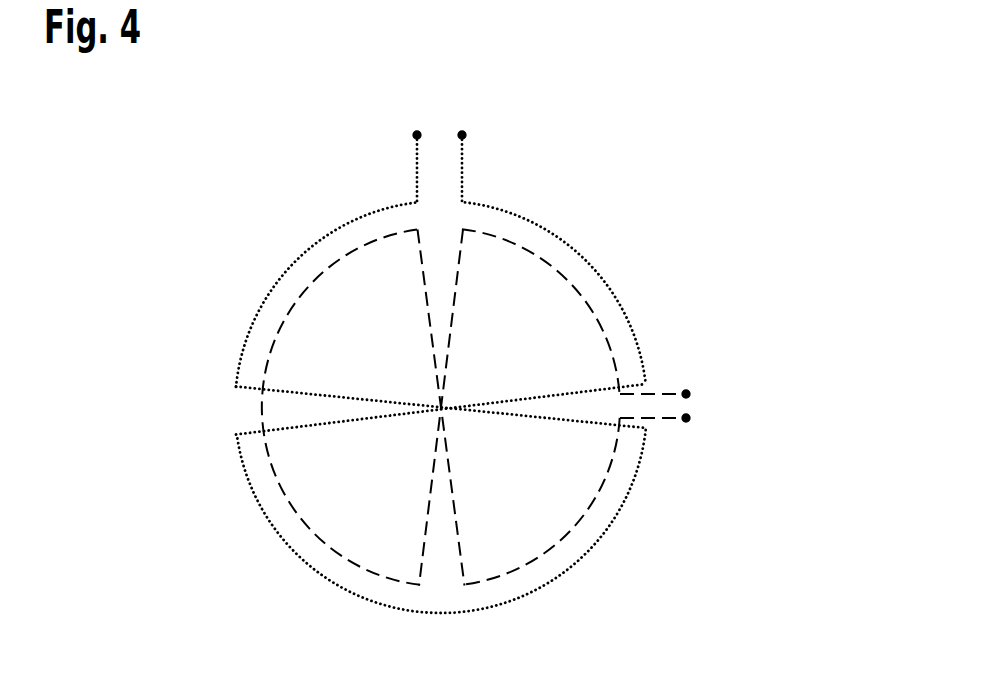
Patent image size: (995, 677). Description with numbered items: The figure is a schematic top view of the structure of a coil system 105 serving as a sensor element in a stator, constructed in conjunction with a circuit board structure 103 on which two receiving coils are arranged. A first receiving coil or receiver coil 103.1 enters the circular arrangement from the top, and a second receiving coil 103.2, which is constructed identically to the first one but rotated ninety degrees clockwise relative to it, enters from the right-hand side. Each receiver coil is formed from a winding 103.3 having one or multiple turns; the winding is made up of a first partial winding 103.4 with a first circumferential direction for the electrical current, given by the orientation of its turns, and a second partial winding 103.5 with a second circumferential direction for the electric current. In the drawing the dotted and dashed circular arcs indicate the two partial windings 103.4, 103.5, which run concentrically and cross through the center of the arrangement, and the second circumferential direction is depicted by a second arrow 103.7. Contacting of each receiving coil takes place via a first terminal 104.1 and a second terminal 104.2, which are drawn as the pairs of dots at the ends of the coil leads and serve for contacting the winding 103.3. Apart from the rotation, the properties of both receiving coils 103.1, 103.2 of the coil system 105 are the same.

The circuit board structure 103 is at (222, 175).
The coil system 105 is at (472, 332).
The first receiving coil 103.1 is at (437, 125).
The second receiving coil 103.2 is at (700, 406).
The winding 103.3 is at (562, 240).
The first partial winding 103.4 is at (212, 331).
The second partial winding 103.5 is at (270, 298).
The second arrow 103.7 is at (410, 408).
The first terminal 104.1 is at (462, 135).
The second terminal 104.2 is at (417, 135).